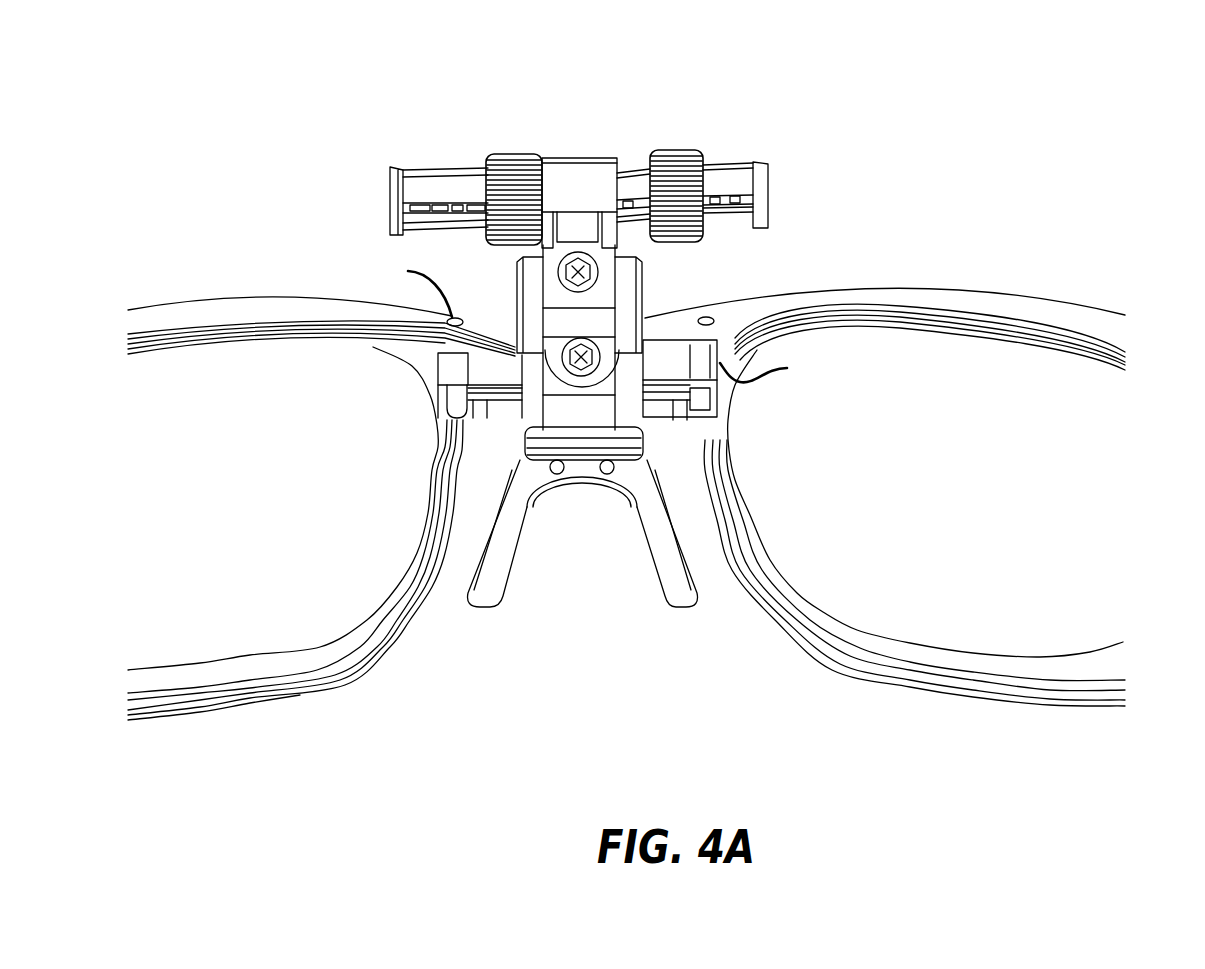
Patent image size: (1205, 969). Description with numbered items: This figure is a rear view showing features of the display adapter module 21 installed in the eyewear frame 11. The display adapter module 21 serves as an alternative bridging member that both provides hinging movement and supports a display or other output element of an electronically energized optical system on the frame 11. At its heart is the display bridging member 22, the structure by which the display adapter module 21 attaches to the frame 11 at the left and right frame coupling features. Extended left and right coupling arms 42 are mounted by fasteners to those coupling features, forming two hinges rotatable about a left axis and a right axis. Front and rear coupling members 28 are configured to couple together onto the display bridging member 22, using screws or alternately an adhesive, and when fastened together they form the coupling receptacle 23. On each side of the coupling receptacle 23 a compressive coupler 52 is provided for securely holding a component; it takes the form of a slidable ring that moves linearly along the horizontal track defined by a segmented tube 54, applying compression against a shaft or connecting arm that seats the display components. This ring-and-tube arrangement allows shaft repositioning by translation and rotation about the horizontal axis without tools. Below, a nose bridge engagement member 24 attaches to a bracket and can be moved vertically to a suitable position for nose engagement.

The frame 11 is at (985, 298).
The display adapter module 21 is at (730, 114).
The display bridging member 22 is at (645, 317).
The coupling receptacle 23 is at (393, 175).
The nose bridge engagement member 24 is at (507, 553).
The coupling members 28 is at (602, 410).
The coupling arms 42 is at (493, 387).
The compressive coupler 52 is at (678, 157).
The segmented tube 54 is at (765, 180).